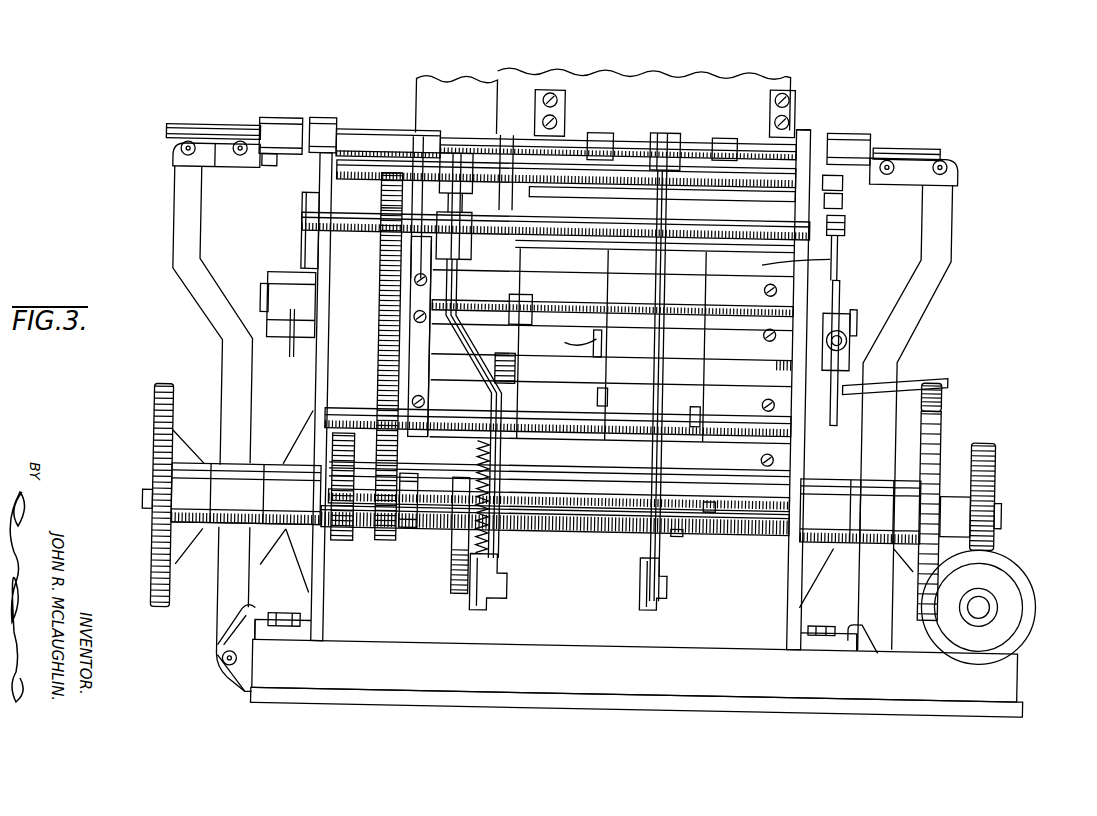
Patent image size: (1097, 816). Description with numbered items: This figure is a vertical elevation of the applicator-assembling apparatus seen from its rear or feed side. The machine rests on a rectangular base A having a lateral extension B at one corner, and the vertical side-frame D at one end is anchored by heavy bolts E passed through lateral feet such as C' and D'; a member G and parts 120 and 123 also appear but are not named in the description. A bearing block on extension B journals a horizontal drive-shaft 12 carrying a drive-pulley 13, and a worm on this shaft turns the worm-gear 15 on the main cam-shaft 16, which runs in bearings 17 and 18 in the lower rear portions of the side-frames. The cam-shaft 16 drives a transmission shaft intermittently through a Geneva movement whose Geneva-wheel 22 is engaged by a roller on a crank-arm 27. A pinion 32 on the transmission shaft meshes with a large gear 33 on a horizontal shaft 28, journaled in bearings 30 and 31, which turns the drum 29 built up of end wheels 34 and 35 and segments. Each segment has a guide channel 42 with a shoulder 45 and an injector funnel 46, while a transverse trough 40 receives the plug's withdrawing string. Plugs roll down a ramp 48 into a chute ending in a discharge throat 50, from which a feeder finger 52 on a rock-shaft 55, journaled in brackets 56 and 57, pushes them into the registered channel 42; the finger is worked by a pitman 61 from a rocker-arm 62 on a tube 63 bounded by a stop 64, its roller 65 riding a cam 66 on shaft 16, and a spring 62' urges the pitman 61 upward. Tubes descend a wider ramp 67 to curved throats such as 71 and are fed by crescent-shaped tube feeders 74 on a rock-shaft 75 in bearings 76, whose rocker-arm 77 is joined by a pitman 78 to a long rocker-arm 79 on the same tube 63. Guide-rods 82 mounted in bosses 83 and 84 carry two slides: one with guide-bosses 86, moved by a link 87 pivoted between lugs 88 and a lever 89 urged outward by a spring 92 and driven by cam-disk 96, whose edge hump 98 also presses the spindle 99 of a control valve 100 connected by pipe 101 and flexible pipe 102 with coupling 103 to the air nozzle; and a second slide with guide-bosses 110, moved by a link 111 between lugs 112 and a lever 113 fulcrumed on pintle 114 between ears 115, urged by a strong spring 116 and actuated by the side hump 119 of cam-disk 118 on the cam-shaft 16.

The drive-shaft 12 is at (994, 601).
The drive-pulley 13 is at (1034, 617).
The worm-gear 15 is at (997, 532).
The main actuating or cam shaft 16 is at (147, 500).
The bearing 17 is at (822, 536).
The bearing 18 is at (293, 533).
The Geneva-wheel 22 is at (350, 550).
The crank-arm 27 is at (403, 534).
The horizontal shaft 28 is at (259, 302).
The drum 29 is at (726, 472).
The bearing 30 is at (282, 285).
The bearing 31 is at (852, 275).
The pinion 32 is at (401, 561).
The large gear 33 is at (390, 192).
The end wheel 34 is at (430, 398).
The end wheel 35 is at (762, 387).
The transverse trough 40 is at (522, 283).
The guide channel 42 is at (716, 309).
The shoulder 45 is at (643, 325).
The injector funnel 46 is at (532, 306).
The ramp 48 is at (431, 89).
The discharge throat 50 is at (394, 200).
The feeder finger 52 is at (447, 168).
The rock-shaft 55 is at (355, 230).
The bracket 56 is at (839, 223).
The bracket 57 is at (308, 228).
The pitman 61 is at (469, 371).
The rocker-arm 62 is at (489, 596).
The spring 62' is at (558, 415).
The tube 63 is at (578, 533).
The stop 64 is at (685, 535).
The roller 65 is at (460, 595).
The cam 66 is at (458, 525).
The tube ramp 67 is at (635, 72).
The curved throat 71 is at (721, 238).
The tube feeders 74 is at (591, 140).
The rock-shaft 75 is at (692, 133).
The bearing 76 is at (552, 112).
The rocker-arm 77 is at (655, 144).
The pitman 78 is at (652, 257).
The long rocker-arm 79 is at (638, 560).
The guide-rods 82 is at (209, 134).
The bosses 83 is at (806, 135).
The bosses 84 is at (316, 126).
The guide-bosses 86 is at (846, 128).
The link 87 is at (900, 154).
The lugs 88 is at (841, 177).
The lever 89 is at (937, 229).
The spring 92 is at (866, 620).
The cam-disk 96 is at (936, 434).
The edge hump 98 is at (940, 389).
The spindle 99 is at (934, 379).
The control valve 100 is at (849, 335).
The pipe 101 is at (845, 407).
The flexible pipe 102 is at (780, 265).
The coupling 103 is at (838, 195).
The guide-bosses 110 is at (269, 133).
The link 111 is at (209, 170).
The lugs 112 is at (243, 165).
The lever 113 is at (182, 258).
The pintle 114 is at (228, 668).
The ears 115 is at (245, 680).
The spring 116 is at (237, 646).
The cam-disk 118 is at (163, 567).
The side hump 119 is at (202, 538).
The bar 120 is at (380, 144).
The spring 123 is at (564, 340).
The base A is at (673, 658).
The lateral extension B is at (926, 699).
The side-frame D is at (309, 397).
The lateral foot D' is at (839, 658).
The bolts E is at (286, 639).
The lateral foot C' is at (292, 645).
The plate G is at (794, 608).